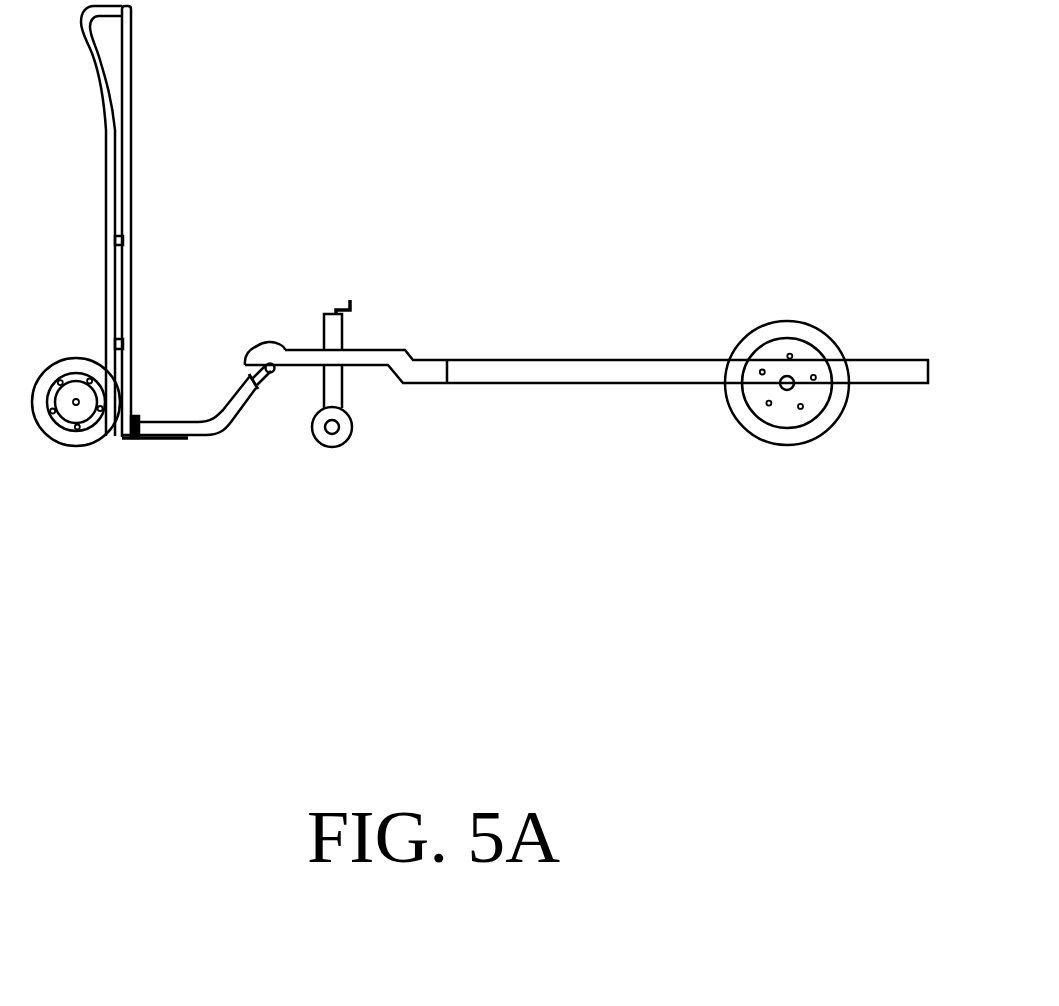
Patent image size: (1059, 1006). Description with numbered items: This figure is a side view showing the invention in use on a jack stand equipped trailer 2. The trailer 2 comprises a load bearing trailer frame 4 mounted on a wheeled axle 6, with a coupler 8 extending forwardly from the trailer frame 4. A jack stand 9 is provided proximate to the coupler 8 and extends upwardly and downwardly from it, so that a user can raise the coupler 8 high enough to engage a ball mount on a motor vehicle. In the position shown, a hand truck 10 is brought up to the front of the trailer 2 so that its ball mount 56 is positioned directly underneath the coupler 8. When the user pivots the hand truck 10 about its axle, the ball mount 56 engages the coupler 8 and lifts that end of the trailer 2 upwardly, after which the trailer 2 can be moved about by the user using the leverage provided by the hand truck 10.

The hand truck 10 is at (172, 148).
The trailer 2 is at (545, 318).
The trailer frame 4 is at (602, 360).
The wheeled axle 6 is at (791, 379).
The coupler 8 is at (275, 343).
The jack stand 9 is at (343, 332).
The ball mount 56 is at (268, 374).